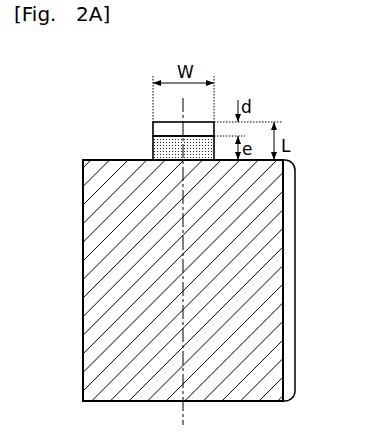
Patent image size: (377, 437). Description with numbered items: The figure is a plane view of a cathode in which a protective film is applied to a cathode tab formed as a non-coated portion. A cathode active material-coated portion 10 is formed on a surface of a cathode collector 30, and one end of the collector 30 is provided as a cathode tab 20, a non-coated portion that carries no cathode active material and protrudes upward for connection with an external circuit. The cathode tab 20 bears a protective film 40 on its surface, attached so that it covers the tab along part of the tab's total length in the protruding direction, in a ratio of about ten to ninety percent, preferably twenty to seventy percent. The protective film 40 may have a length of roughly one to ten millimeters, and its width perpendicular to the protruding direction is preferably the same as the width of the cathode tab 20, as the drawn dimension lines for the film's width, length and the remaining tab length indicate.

The cathode active material-coated portion 10 is at (83, 266).
The cathode tab 20 is at (153, 131).
The cathode collector 30 is at (295, 267).
The protective film 40 is at (153, 150).